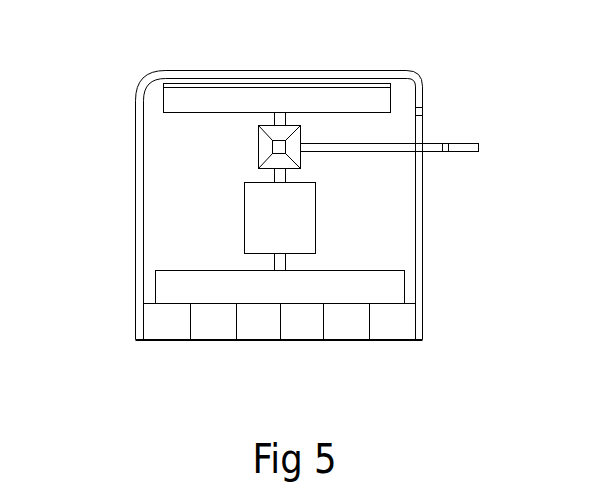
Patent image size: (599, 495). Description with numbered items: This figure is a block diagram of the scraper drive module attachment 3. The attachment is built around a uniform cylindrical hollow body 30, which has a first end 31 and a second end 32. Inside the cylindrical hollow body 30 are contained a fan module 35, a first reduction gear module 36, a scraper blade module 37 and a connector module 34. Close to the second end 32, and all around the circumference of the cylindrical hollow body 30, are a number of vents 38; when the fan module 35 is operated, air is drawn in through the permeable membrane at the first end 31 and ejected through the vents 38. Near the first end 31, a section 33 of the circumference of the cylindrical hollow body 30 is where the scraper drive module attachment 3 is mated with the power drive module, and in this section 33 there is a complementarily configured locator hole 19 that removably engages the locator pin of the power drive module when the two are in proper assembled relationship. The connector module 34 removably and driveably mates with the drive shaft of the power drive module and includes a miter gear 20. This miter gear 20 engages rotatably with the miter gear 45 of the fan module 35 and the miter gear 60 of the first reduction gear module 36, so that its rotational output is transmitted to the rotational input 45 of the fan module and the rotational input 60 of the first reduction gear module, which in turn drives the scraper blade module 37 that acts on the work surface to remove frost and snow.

The scraper drive module attachment 3 is at (263, 48).
The locator hole 19 is at (421, 107).
The miter gear 20 is at (300, 157).
The cylindrical hollow body 30 is at (143, 252).
The first end 31 is at (200, 70).
The second end 32 is at (162, 339).
The section 33 is at (413, 93).
The connector module 34 is at (457, 143).
The fan module 35 is at (163, 100).
The first reduction gear module 36 is at (315, 213).
The scraper blade module 37 is at (155, 295).
The vents 38 is at (369, 327).
The miter gear 45 is at (258, 133).
The miter gear 60 is at (258, 162).